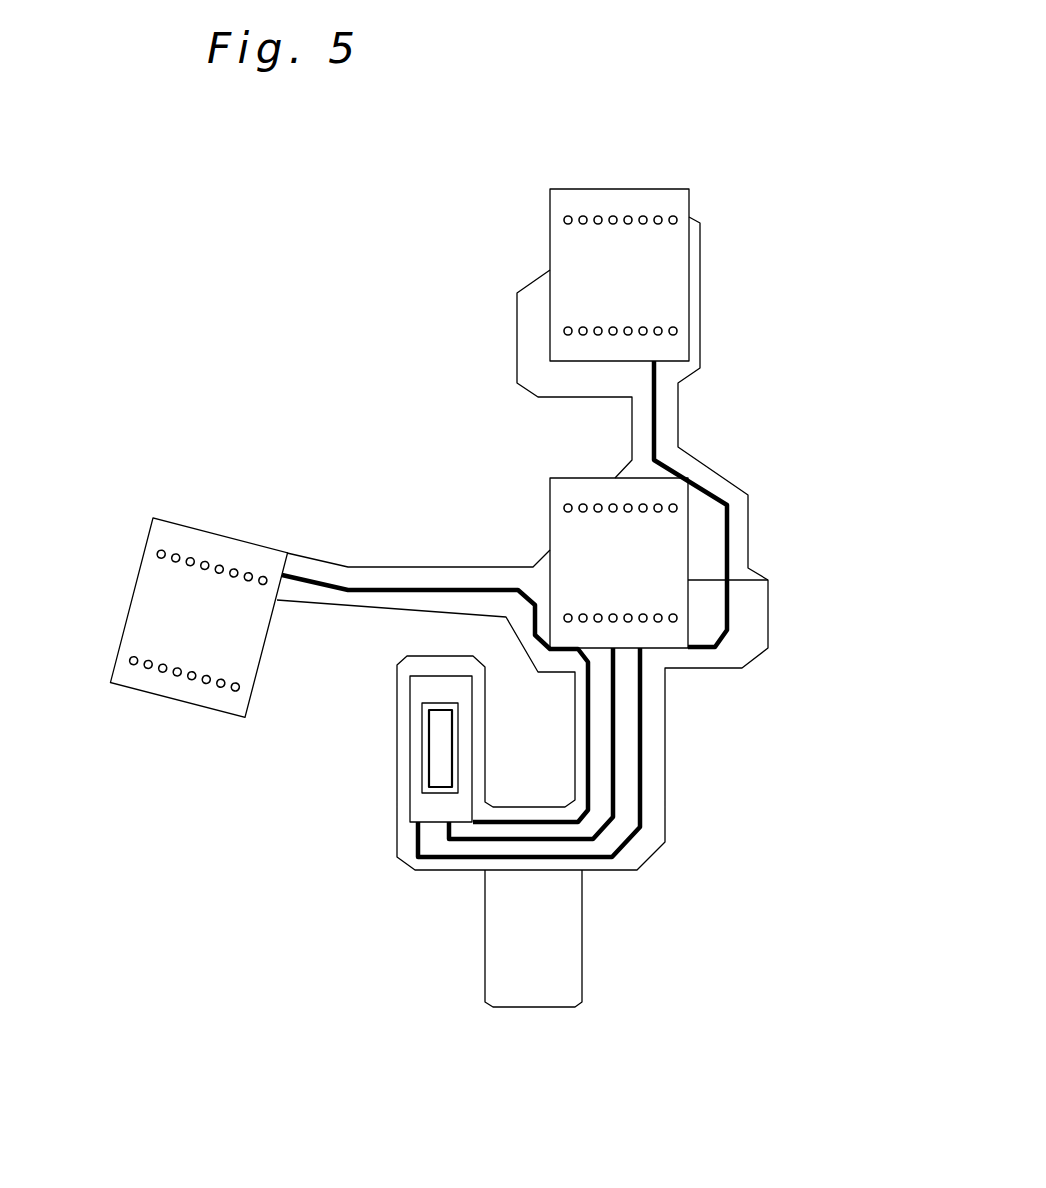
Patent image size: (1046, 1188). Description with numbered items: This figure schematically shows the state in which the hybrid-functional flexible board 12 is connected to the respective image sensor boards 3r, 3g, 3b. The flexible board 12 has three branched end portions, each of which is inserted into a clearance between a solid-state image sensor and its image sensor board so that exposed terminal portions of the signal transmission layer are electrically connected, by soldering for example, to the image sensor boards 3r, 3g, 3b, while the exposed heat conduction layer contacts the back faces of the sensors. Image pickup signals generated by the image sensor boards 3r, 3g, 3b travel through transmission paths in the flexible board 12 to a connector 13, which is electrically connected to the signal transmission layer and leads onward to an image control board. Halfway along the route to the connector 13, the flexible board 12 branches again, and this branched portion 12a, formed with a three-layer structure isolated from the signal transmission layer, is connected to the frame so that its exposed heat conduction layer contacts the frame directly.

The hybrid-functional flexible board 12 is at (773, 618).
The branched portion 12a is at (568, 965).
The connector 13 is at (430, 807).
The image sensor board 3r is at (650, 202).
The image sensor board 3g is at (155, 617).
The image sensor board 3b is at (560, 530).